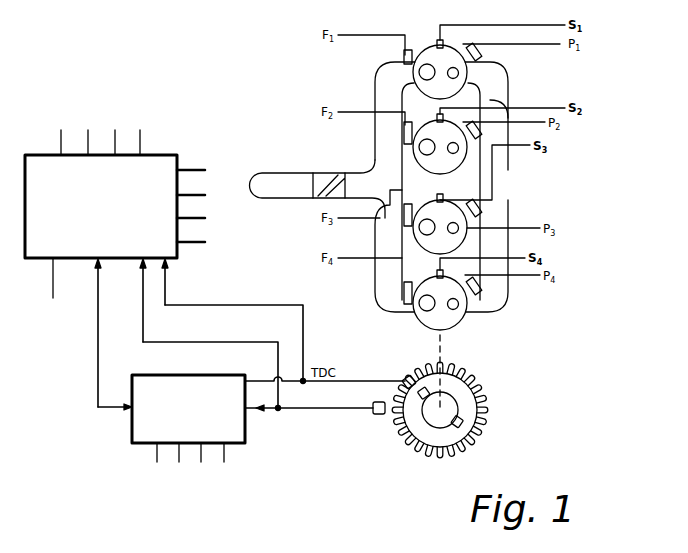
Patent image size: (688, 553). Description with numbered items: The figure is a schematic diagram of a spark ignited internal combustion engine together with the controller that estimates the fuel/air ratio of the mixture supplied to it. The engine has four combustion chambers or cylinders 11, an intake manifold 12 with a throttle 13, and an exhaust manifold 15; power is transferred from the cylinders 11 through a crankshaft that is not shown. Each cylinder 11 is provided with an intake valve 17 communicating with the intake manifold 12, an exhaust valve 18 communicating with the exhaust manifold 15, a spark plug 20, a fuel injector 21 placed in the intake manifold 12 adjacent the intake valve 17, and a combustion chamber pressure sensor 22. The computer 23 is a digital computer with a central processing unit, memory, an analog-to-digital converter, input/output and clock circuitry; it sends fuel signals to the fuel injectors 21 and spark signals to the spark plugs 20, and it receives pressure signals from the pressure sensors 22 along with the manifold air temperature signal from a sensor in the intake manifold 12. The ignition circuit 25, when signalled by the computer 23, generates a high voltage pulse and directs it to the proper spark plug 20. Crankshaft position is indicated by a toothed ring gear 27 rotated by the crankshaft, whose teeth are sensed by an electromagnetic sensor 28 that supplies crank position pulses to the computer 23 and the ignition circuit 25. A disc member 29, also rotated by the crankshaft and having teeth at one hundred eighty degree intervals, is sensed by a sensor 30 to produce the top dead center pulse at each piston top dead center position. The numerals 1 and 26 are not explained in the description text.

The engine control system 1 is at (424, 24).
The cylinder 11 is at (400, 106).
The intake manifold 12 is at (378, 78).
The throttle 13 is at (326, 173).
The exhaust manifold 15 is at (506, 86).
The intake valve 17 is at (428, 58).
The exhaust valve 18 is at (496, 94).
The spark plug 20 is at (442, 40).
The fuel injector 21 is at (404, 56).
The combustion chamber pressure sensor 22 is at (476, 54).
The computer 23 is at (155, 155).
The ignition circuit 25 is at (138, 426).
The toothed wheel 26 is at (403, 450).
The ring gear 27 is at (460, 425).
The electromagnetic sensor 28 is at (375, 418).
The disc member 29 is at (425, 388).
The sensor 30 is at (405, 380).